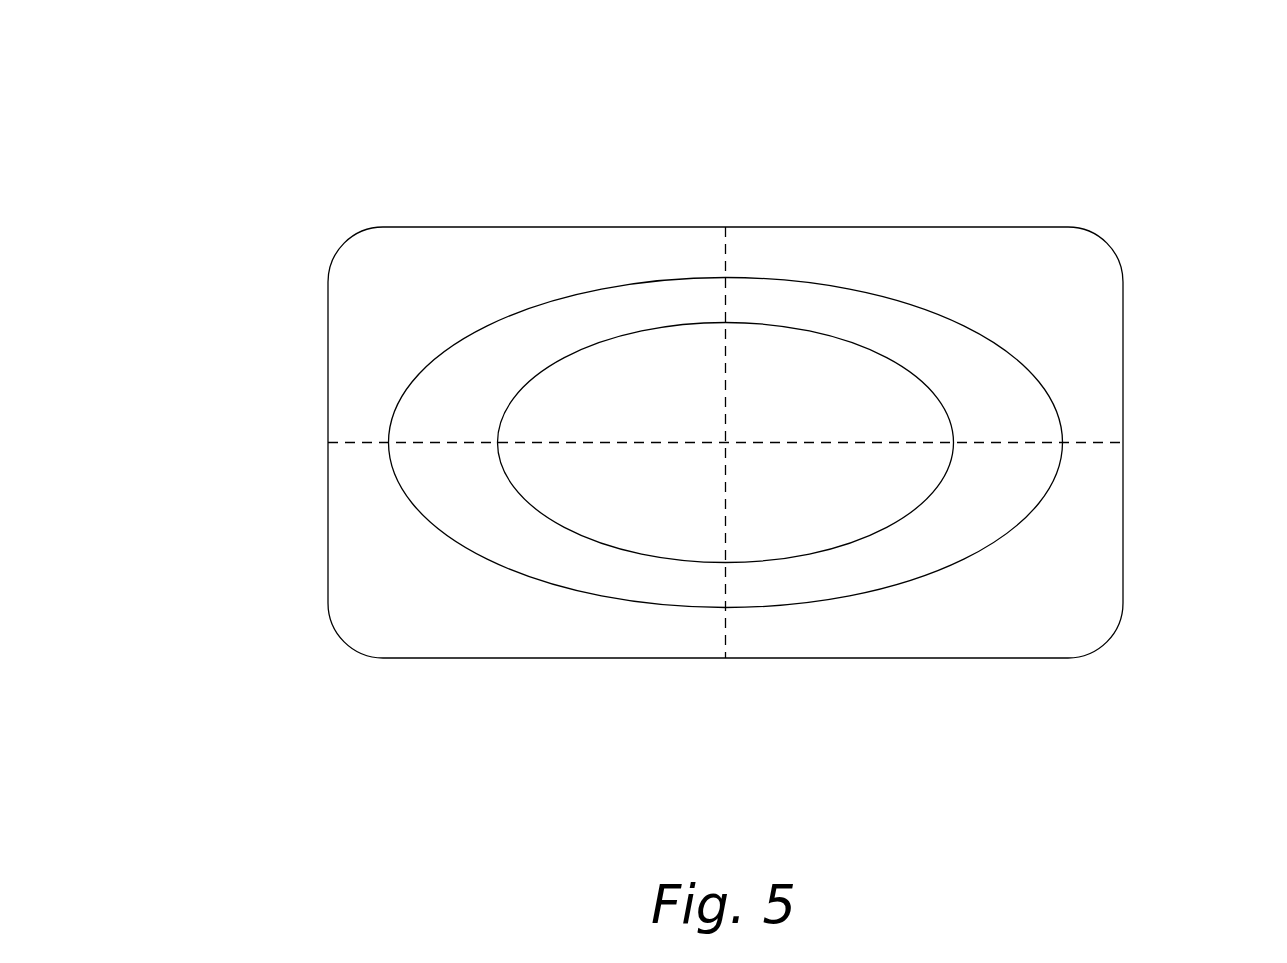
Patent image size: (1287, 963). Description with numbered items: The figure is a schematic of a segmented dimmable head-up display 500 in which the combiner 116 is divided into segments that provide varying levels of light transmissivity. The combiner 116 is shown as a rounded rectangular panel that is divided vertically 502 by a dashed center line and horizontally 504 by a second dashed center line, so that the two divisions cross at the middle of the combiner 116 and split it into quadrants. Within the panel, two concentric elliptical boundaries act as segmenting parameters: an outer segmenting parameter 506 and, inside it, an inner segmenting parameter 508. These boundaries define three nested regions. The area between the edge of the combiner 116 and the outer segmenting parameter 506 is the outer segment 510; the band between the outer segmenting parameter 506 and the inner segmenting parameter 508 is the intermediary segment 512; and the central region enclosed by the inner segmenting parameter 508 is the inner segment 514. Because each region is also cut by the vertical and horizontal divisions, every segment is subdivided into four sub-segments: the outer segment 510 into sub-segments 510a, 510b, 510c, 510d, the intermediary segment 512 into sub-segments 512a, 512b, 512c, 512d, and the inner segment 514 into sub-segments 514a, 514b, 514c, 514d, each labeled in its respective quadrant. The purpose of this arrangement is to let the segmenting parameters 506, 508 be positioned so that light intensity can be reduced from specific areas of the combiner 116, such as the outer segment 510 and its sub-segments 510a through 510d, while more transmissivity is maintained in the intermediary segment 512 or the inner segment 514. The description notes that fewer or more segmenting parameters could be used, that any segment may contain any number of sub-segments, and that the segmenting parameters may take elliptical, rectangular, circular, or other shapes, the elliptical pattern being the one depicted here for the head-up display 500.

The segmented dimmable head-up display 500 is at (185, 100).
The combiner 116 is at (1123, 285).
The vertical division 502 is at (727, 247).
The horizontal division 504 is at (1082, 442).
The outer segmenting parameter 506 is at (589, 594).
The inner segmenting parameter 508 is at (799, 558).
The outer segment 510 is at (535, 258).
The sub-segment of outer segment 510a is at (1030, 296).
The sub-segment of outer segment 510b is at (1030, 607).
The sub-segment of outer segment 510c is at (466, 607).
The sub-segment of outer segment 510d is at (463, 296).
The intermediary segment 512 is at (588, 323).
The sub-segment of intermediary segment 512a is at (932, 350).
The sub-segment of intermediary segment 512b is at (937, 562).
The sub-segment of intermediary segment 512c is at (563, 554).
The sub-segment of intermediary segment 512d is at (563, 348).
The inner segment 514 is at (633, 365).
The sub-segment of inner segment 514a is at (828, 404).
The sub-segment of inner segment 514b is at (827, 519).
The sub-segment of inner segment 514c is at (688, 519).
The sub-segment of inner segment 514d is at (688, 404).